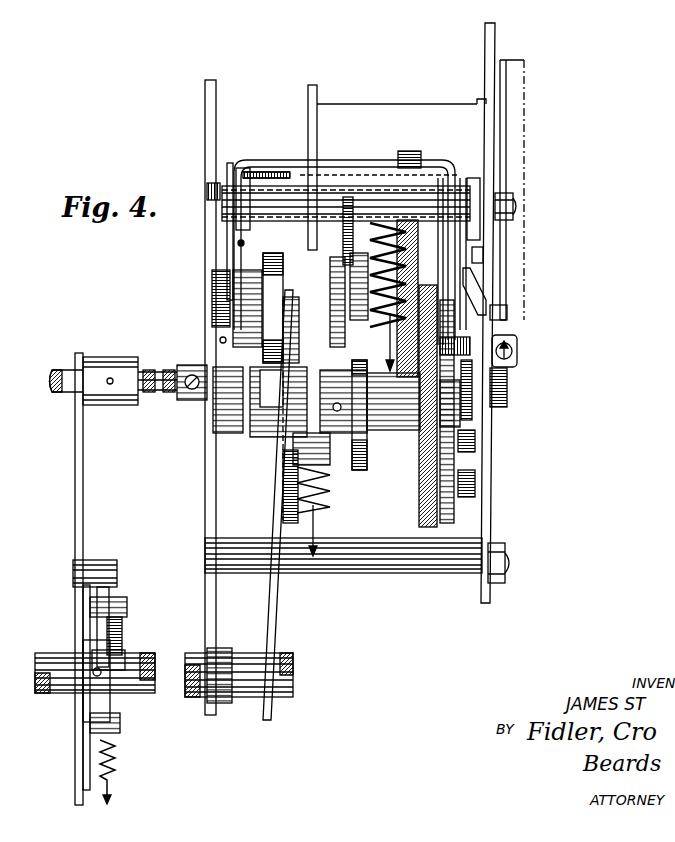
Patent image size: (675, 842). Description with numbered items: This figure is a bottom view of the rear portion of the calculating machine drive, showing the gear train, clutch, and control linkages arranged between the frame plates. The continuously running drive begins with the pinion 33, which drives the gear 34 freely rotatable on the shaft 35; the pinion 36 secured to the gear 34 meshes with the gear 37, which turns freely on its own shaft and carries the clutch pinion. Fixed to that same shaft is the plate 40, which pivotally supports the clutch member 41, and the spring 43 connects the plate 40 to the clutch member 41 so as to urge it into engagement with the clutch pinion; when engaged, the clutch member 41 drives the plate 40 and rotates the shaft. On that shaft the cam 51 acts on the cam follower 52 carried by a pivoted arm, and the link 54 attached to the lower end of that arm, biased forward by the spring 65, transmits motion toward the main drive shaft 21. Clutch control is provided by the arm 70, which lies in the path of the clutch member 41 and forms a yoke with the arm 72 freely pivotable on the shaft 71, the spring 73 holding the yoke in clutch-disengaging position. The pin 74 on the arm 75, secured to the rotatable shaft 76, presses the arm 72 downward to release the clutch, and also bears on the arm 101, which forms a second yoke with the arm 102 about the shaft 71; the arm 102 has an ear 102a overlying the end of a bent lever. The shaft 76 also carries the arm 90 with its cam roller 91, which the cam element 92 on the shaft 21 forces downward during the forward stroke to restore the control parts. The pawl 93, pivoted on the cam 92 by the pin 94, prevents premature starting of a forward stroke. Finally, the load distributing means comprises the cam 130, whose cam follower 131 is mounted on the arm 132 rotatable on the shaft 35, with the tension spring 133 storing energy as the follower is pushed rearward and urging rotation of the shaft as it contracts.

The main drive shaft 21 is at (187, 703).
The pinion 33 is at (409, 158).
The gear 34 is at (412, 240).
The shaft 35 is at (472, 300).
The pinion 36 is at (433, 270).
The gear 37 is at (418, 520).
The plate 40 is at (456, 500).
The clutch member 41 is at (452, 455).
The spring 43 is at (484, 388).
The cam 51 is at (281, 357).
The cam follower 52 is at (292, 303).
The link 54 is at (277, 588).
The spring 65 is at (320, 497).
The arm 70 is at (488, 328).
The shaft 71 is at (514, 212).
The arm 72 is at (238, 243).
The spring 73 is at (516, 364).
The pin 74 is at (220, 302).
The arm 75 is at (220, 338).
The shaft 76 is at (166, 382).
The arm 90 is at (83, 498).
The cam roller 91 is at (102, 572).
The cam element 92 is at (88, 630).
The pawl 93 is at (110, 593).
The pin 94 is at (123, 636).
The arm 101 is at (226, 268).
The arm 102 is at (473, 190).
The ear 102a is at (507, 313).
The cam 130 is at (365, 458).
The cam follower 131 is at (372, 245).
The arm 132 is at (338, 230).
The tension spring 133 is at (383, 348).